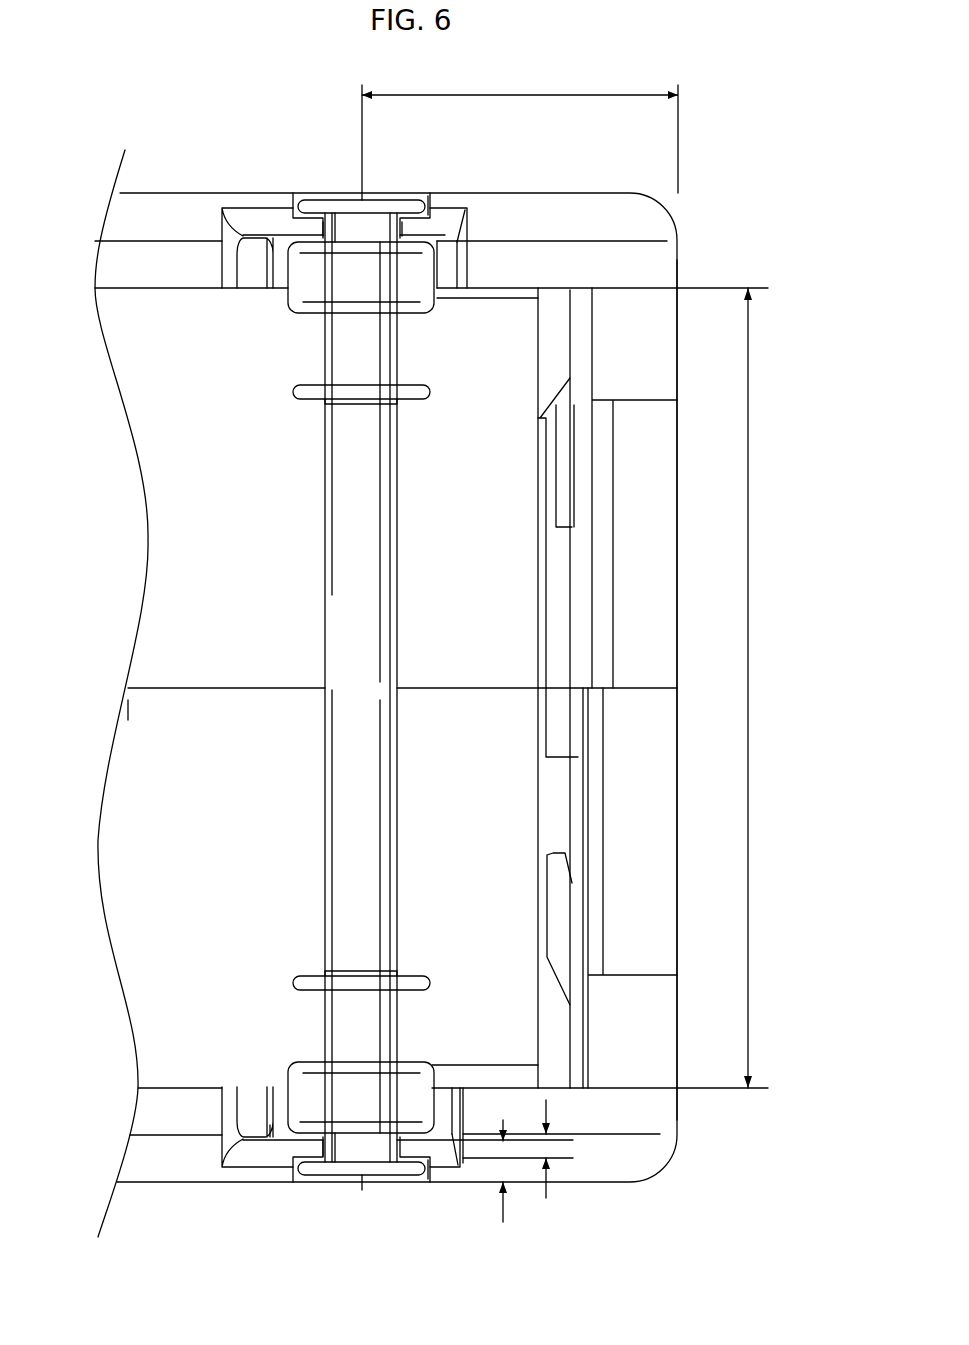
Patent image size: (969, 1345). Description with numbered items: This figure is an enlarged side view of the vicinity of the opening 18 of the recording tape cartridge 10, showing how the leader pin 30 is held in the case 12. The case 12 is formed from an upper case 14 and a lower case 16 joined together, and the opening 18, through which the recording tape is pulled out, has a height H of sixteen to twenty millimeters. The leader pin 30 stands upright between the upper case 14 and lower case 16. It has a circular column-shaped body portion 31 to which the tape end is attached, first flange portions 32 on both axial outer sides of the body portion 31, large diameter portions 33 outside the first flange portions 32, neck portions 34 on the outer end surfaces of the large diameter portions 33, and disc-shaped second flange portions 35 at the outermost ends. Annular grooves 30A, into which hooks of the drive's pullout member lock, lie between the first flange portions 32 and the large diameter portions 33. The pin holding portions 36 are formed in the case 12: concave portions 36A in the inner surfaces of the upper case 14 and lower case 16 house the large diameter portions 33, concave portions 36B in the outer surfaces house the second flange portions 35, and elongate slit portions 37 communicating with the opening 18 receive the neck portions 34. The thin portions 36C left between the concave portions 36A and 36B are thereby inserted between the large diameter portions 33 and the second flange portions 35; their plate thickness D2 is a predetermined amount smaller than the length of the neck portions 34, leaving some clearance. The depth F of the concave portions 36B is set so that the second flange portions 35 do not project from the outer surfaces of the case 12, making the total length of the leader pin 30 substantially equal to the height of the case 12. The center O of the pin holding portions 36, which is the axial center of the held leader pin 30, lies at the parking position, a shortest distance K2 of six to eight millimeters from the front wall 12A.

The recording tape cartridge 10 is at (732, 178).
The case 12 is at (431, 693).
The front wall 12A is at (682, 268).
The upper case 14 is at (190, 190).
The lower case 16 is at (189, 1187).
The opening 18 is at (157, 730).
The leader pin 30 is at (400, 560).
The annular grooves 30A is at (372, 355).
The body portion 31 is at (345, 553).
The first flange portions 32 is at (291, 392).
The large diameter portions 33 is at (291, 303).
The neck portions 34 is at (382, 230).
The second flange portions 35 is at (395, 200).
The pin holding portions 36 is at (308, 193).
The concave portions 36A is at (262, 262).
The concave portions 36B is at (423, 203).
The thin portions 36C is at (420, 233).
The slit portions 37 is at (322, 233).
The center O is at (360, 195).
The shortest distance K2 is at (518, 95).
The height H is at (750, 690).
The depth F is at (505, 1170).
The plate thickness D2 is at (548, 1148).